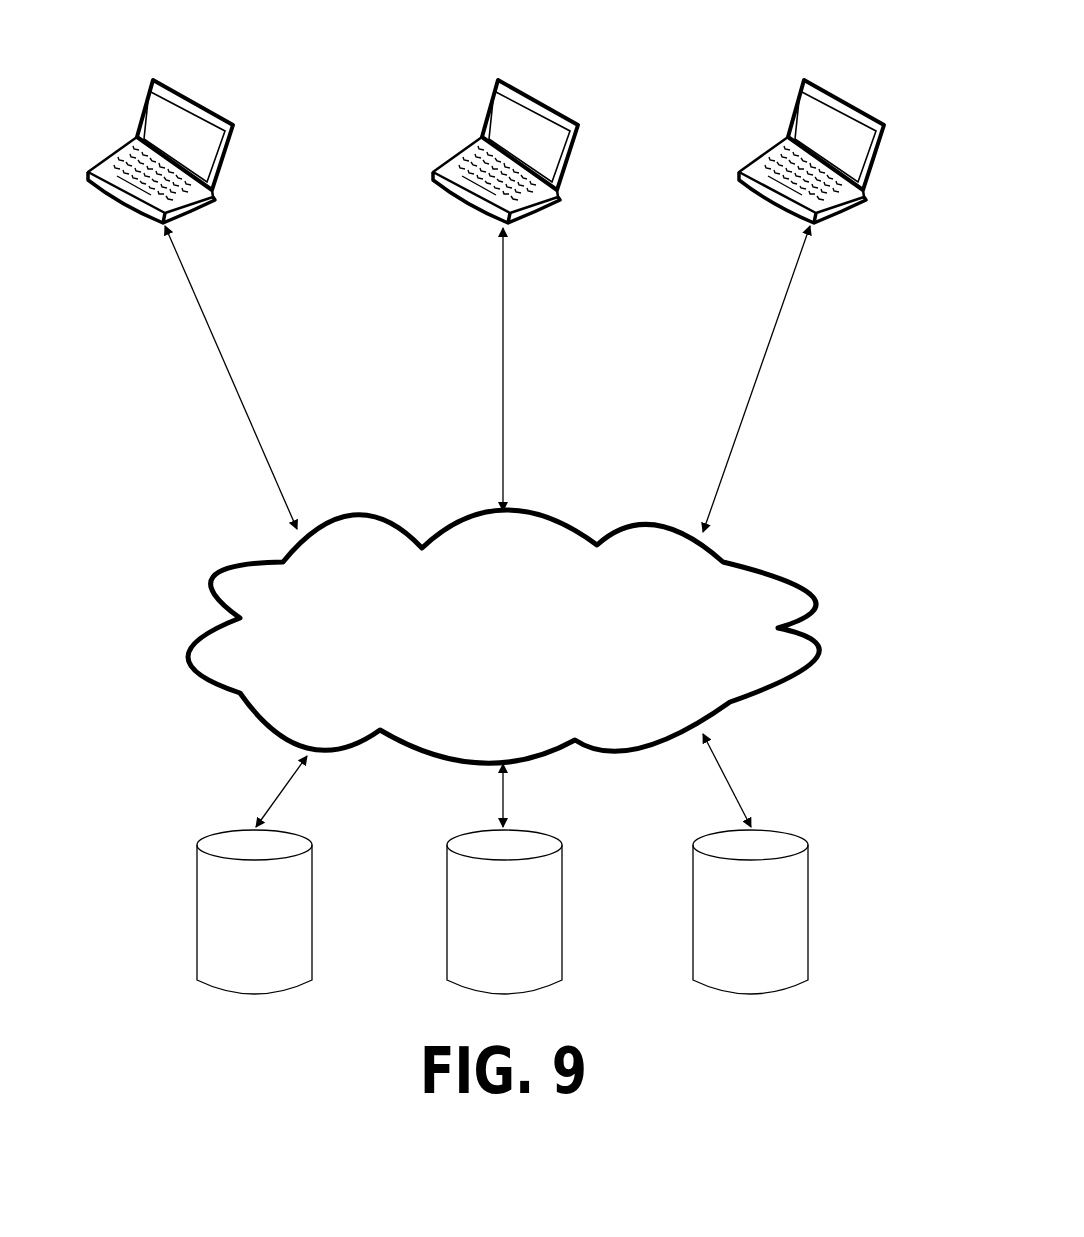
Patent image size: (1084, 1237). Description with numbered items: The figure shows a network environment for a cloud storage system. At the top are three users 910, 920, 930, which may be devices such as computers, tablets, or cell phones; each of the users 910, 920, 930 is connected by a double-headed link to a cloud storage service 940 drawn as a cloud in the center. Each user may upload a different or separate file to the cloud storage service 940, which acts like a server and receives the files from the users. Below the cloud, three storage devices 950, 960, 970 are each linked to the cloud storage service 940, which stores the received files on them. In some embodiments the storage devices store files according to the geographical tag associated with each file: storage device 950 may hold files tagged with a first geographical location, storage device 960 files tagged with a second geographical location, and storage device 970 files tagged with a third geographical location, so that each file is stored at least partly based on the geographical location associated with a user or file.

The user 910 is at (190, 93).
The user 920 is at (557, 103).
The user 930 is at (845, 93).
The cloud storage service 940 is at (472, 673).
The storage device 950 is at (236, 931).
The storage device 960 is at (486, 931).
The storage device 970 is at (732, 931).